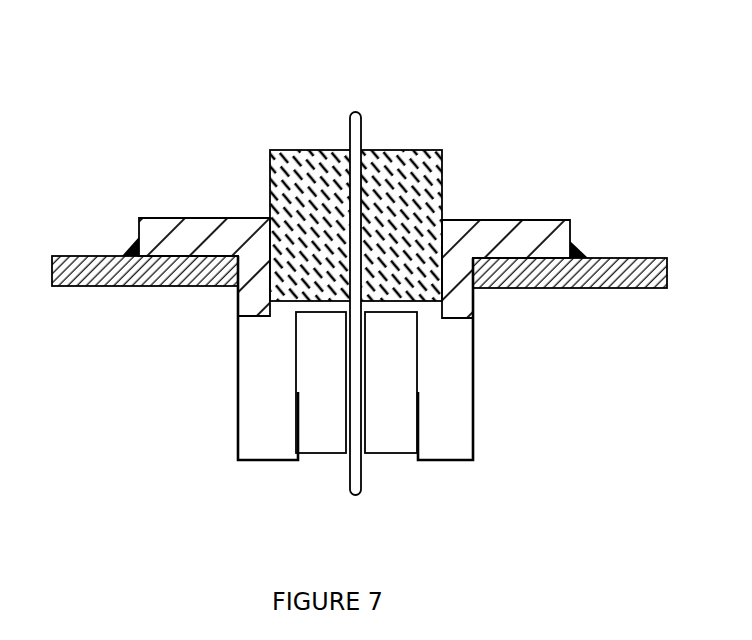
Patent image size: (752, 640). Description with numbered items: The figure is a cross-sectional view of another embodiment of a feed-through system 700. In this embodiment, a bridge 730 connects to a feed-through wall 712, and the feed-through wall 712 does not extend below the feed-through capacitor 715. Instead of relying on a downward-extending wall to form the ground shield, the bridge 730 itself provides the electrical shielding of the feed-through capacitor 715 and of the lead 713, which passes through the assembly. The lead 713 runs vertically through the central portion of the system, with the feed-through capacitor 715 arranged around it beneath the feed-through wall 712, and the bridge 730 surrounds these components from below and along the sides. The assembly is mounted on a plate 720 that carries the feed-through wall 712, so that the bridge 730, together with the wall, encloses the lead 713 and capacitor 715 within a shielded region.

The feed-through system 700 is at (93, 83).
The feed-through wall 712 is at (176, 212).
The lead 713 is at (358, 122).
The feed-through capacitor 715 is at (335, 445).
The mounting plate 720 is at (652, 278).
The bridge 730 is at (438, 462).